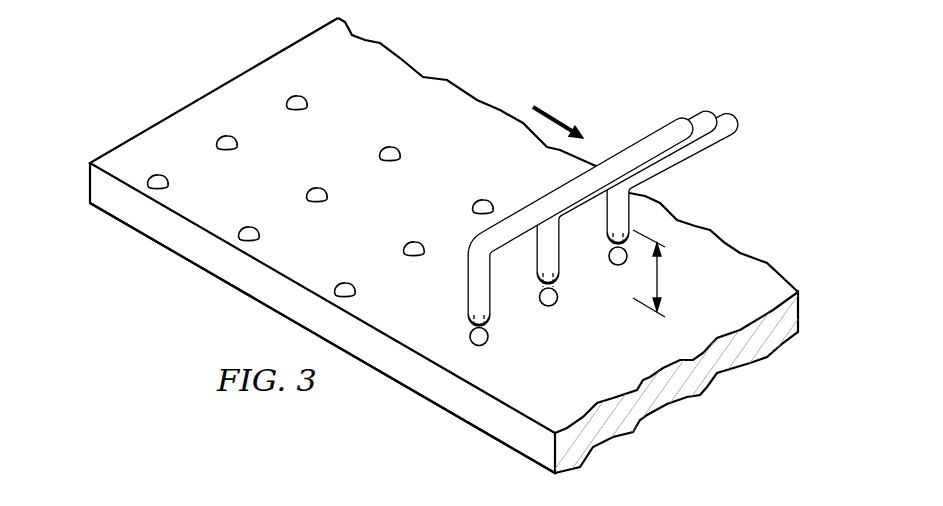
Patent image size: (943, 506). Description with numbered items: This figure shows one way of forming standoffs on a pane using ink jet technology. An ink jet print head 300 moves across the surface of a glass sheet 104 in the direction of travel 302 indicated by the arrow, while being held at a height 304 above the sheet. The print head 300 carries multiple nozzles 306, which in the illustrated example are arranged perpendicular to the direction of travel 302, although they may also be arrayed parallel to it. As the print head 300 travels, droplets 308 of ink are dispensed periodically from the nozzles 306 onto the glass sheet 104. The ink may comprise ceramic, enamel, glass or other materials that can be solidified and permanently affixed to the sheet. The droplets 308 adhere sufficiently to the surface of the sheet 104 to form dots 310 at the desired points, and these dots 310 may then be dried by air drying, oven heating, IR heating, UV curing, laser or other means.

The glass sheet 104 is at (121, 162).
The ink jet print head 300 is at (634, 142).
The arrow denoting direction of travel 302 is at (552, 112).
The height 304 is at (658, 277).
The nozzles 306 is at (467, 287).
The droplets 308 is at (488, 342).
The dots 310 is at (301, 96).